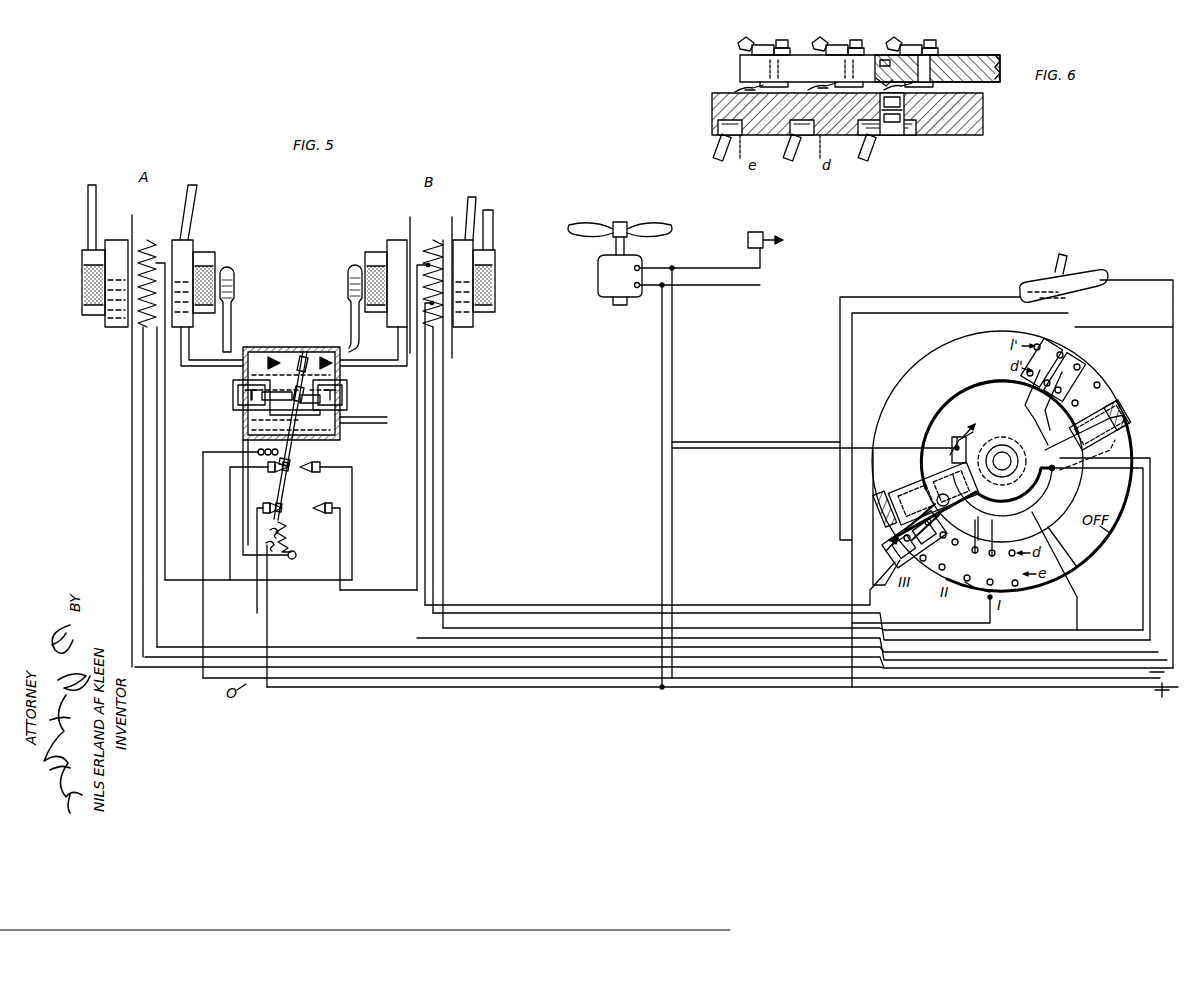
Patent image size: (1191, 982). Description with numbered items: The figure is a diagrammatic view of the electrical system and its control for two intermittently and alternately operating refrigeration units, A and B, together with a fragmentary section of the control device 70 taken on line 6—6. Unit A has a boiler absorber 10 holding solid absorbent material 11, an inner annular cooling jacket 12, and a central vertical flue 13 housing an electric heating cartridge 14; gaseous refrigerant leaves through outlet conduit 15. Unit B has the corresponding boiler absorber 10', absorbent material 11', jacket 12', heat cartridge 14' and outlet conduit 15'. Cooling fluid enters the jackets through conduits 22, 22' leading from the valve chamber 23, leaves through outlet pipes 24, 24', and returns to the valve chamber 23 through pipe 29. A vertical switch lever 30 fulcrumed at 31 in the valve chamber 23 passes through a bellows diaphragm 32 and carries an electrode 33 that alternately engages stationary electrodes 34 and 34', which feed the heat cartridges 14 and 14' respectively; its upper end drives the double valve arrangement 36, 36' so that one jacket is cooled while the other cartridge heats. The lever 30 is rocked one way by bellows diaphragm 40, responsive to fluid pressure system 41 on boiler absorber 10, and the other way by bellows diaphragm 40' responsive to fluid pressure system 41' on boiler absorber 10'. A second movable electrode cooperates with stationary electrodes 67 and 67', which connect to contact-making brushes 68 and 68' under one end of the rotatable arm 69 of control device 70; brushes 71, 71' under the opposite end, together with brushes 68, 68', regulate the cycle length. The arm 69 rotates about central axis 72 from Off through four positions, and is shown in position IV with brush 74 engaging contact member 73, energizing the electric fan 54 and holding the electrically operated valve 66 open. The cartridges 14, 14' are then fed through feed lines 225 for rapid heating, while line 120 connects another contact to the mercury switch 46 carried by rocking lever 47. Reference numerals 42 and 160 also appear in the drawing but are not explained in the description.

In FIG. 5, the boiler absorber 10 is at (77, 278).
In FIG. 5, the boiler absorber 10' is at (505, 283).
In FIG. 5, the solid absorbent material 11 is at (221, 278).
In FIG. 5, the solid absorbent material 11' is at (449, 282).
In FIG. 5, the inner annular cooling jacket 12 is at (202, 262).
In FIG. 5, the cooling jacket 12' is at (393, 275).
In FIG. 5, the central vertical flue 13 is at (132, 224).
In FIG. 5, the electric heating cartridge 14 is at (151, 438).
In FIG. 5, the heat cartridge 14' is at (434, 412).
In FIG. 5, the outlet conduit 15 is at (103, 217).
In FIG. 5, the outlet conduit 15' is at (510, 223).
In FIG. 5, the conduit 22 is at (212, 346).
In FIG. 5, the conduit 22' is at (373, 346).
In FIG. 5, the valve chamber 23 is at (289, 347).
In FIG. 5, the outlet pipe 24 is at (211, 203).
In FIG. 5, the outlet pipe 24' is at (479, 248).
In FIG. 5, the pipe 29 is at (383, 424).
In FIG. 5, the switch lever 30 is at (283, 497).
In FIG. 5, the fulcrum 31 is at (249, 447).
In FIG. 5, the bellows diaphragm 32 is at (288, 457).
In FIG. 5, the electrode 33 is at (289, 467).
In FIG. 5, the stationary electrode member 34 is at (330, 511).
In FIG. 5, the stationary electrode 34' is at (259, 521).
In FIG. 5, the reciprocatable valve 36 is at (260, 343).
In FIG. 5, the valve 36' is at (329, 343).
In FIG. 5, the bellows diaphragm 40 is at (234, 401).
In FIG. 5, the bellows diaphragm 40' is at (353, 395).
In FIG. 5, the fluid pressure system 41 is at (247, 308).
In FIG. 5, the fluid pressure system 41' is at (340, 308).
In FIG. 5, the spring 42 is at (292, 542).
In FIG. 5, the mercury switch 46 is at (1098, 291).
In FIG. 5, the rocking lever 47 is at (1064, 258).
In FIG. 5, the electric fan 54 is at (598, 272).
In FIG. 5, the electrically operated valve 66 is at (748, 238).
In FIG. 5, the stationary electrode 67 is at (327, 532).
In FIG. 5, the stationary electrode 67' is at (244, 551).
In FIG. 5, the contact-making brush 68 is at (933, 493).
In FIG. 6, the contact-making brush 68 is at (838, 53).
In FIG. 5, the contact-making brush 68' is at (884, 494).
In FIG. 6, the contact-making brush 68' is at (730, 78).
In FIG. 5, the rotatable arm 69 is at (1027, 437).
In FIG. 6, the rotatable arm 69 is at (975, 55).
In FIG. 5, the control device 70 is at (1002, 461).
In FIG. 6, the control device 70 is at (985, 112).
In FIG. 5, the contact-making brush 71 is at (1060, 391).
In FIG. 5, the contact-making brush 71' is at (1088, 435).
In FIG. 5, the central axis 72 is at (990, 431).
In FIG. 5, the contact member 73 is at (980, 498).
In FIG. 6, the contact member 73 is at (898, 135).
In FIG. 5, the brush 74 is at (952, 445).
In FIG. 6, the brush 74 is at (878, 73).
In FIG. 5, the section line 6 is at (922, 490).
In FIG. 5, the line 120 is at (193, 687).
In FIG. 5, the conductor 160 is at (190, 668).
In FIG. 5, the feed line 225 is at (198, 657).